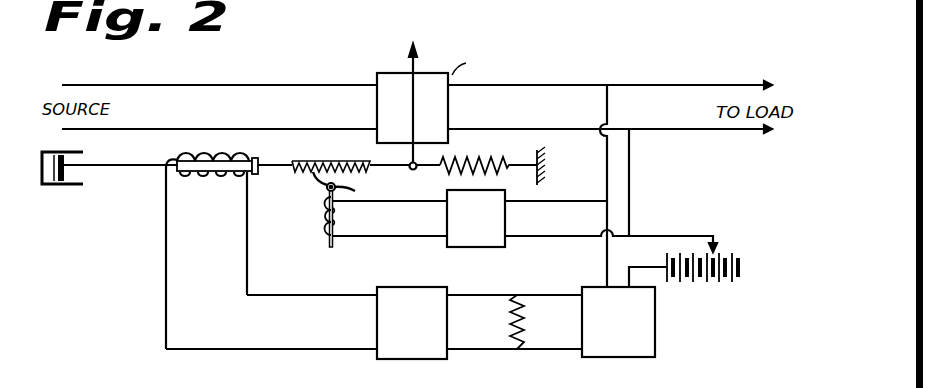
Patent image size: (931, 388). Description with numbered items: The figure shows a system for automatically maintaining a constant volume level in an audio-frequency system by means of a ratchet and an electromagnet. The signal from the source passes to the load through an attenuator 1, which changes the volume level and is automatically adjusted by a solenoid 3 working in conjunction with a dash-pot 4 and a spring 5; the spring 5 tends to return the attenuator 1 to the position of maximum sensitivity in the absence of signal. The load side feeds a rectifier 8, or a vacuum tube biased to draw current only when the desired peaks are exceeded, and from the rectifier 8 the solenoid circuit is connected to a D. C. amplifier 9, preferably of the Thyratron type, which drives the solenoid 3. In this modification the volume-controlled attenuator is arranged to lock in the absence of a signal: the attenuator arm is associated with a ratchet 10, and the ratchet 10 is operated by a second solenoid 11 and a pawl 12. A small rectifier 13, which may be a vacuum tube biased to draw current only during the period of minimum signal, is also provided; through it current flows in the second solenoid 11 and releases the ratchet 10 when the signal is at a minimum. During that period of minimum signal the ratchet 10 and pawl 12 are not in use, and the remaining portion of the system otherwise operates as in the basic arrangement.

The attenuator 1 is at (378, 76).
The solenoid 3 is at (228, 171).
The dash-pot 4 is at (85, 151).
The spring 5 is at (482, 162).
The rectifier 8 is at (613, 336).
The D. C. amplifier 9 is at (415, 336).
The ratchet 10 is at (303, 171).
The second solenoid 11 is at (322, 223).
The pawl 12 is at (356, 191).
The small rectifier 13 is at (482, 230).